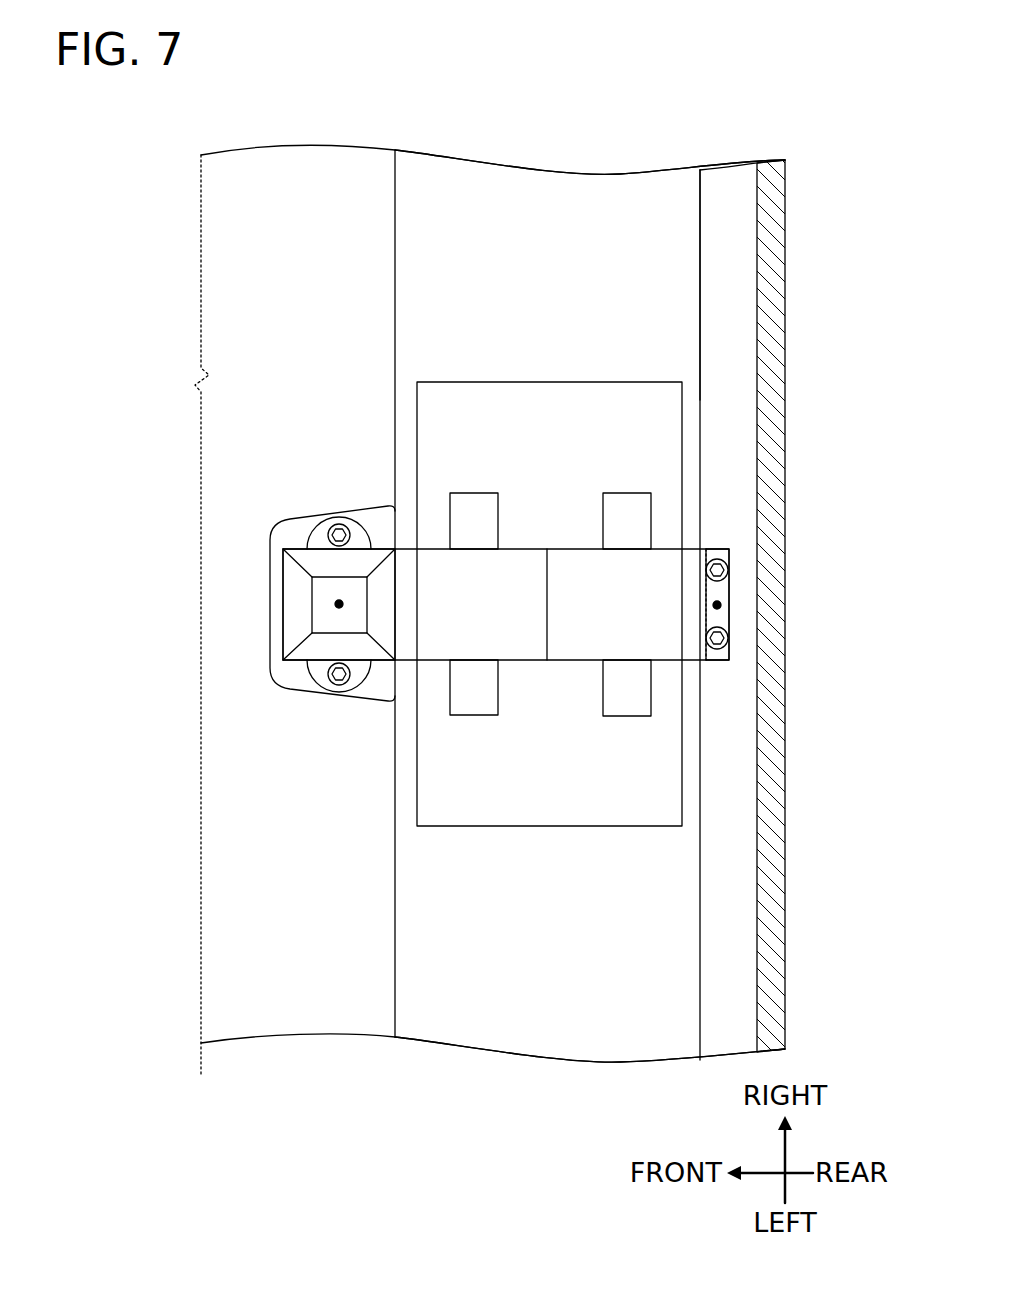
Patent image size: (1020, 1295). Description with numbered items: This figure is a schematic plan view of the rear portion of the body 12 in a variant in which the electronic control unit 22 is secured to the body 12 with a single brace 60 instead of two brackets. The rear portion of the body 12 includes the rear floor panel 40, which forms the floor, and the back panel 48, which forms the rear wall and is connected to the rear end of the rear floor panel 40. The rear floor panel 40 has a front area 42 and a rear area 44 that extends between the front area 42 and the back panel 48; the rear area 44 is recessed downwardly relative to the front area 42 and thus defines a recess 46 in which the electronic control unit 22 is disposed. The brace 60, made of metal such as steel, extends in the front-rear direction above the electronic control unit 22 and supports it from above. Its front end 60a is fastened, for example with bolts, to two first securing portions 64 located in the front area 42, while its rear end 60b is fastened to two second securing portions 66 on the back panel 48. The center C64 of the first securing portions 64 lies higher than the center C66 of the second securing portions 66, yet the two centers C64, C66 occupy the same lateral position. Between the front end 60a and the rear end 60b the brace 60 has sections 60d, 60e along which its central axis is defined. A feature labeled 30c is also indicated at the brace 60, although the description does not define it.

The body 12 is at (780, 107).
The electronic control unit 22 is at (683, 781).
The edge of member 30 30c is at (547, 549).
The rear floor panel 40 is at (380, 1063).
The front area 42 is at (323, 1022).
The rear area 44 is at (548, 1032).
The recess 46 is at (595, 231).
The back panel 48 is at (776, 1003).
The brace 60 is at (522, 525).
The front end 60a is at (298, 637).
The rear end 60b is at (729, 652).
The section 60d is at (473, 647).
The section 60e is at (625, 647).
The first securing portions 64 is at (328, 536).
The center of the first securing portions C64 is at (335, 604).
The second securing portions 66 is at (728, 568).
The center of the second securing portions C66 is at (722, 605).